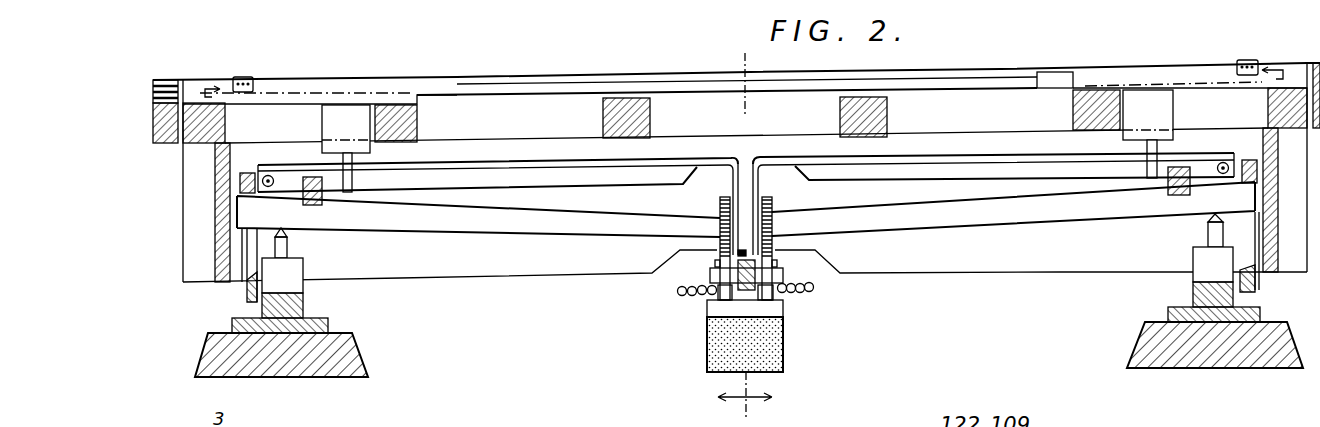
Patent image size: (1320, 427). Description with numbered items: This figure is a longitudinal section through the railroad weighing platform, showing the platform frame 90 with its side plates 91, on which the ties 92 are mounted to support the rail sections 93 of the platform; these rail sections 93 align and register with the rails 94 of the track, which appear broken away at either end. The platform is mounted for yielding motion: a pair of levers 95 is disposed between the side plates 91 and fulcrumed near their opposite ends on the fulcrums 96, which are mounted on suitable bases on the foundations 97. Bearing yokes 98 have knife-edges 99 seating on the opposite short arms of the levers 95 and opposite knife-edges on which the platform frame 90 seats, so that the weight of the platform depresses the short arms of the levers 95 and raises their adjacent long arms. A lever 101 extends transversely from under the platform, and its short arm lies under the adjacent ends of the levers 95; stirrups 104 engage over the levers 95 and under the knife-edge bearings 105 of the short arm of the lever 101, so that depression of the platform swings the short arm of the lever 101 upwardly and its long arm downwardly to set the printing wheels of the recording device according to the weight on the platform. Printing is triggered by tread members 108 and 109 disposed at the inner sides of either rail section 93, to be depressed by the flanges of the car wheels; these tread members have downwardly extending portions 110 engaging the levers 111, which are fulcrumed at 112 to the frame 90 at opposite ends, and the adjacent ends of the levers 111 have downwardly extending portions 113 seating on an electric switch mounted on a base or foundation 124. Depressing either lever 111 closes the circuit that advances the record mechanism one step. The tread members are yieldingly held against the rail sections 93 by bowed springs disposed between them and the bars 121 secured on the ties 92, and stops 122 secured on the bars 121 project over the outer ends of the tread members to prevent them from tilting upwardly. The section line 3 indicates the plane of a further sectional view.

The section line 3- 3 is at (745, 230).
The platform frame 90 is at (923, 286).
The side plates 91 is at (1004, 257).
The ties 92 is at (603, 119).
The rail sections 93 is at (968, 78).
The rails 94 is at (1317, 63).
The levers 95 is at (1067, 218).
The fulcrums 96 is at (1207, 228).
The foundations 97 is at (1143, 323).
The bearing yokes 98 is at (1255, 270).
The knife-edges 99 is at (1242, 189).
The lever 101 is at (743, 300).
The stirrups 104 is at (773, 200).
The knife-edge bearings 105 is at (773, 273).
The tread member 108 is at (1052, 72).
The tread member 109 is at (433, 88).
The downwardly extending portions 110 is at (1120, 142).
The levers 111 is at (987, 165).
The fulcrums 112 is at (1227, 160).
The downwardly extending portions 113 is at (753, 190).
The bars 121 is at (1188, 75).
The stops 122 is at (1247, 60).
The base 124 is at (778, 312).